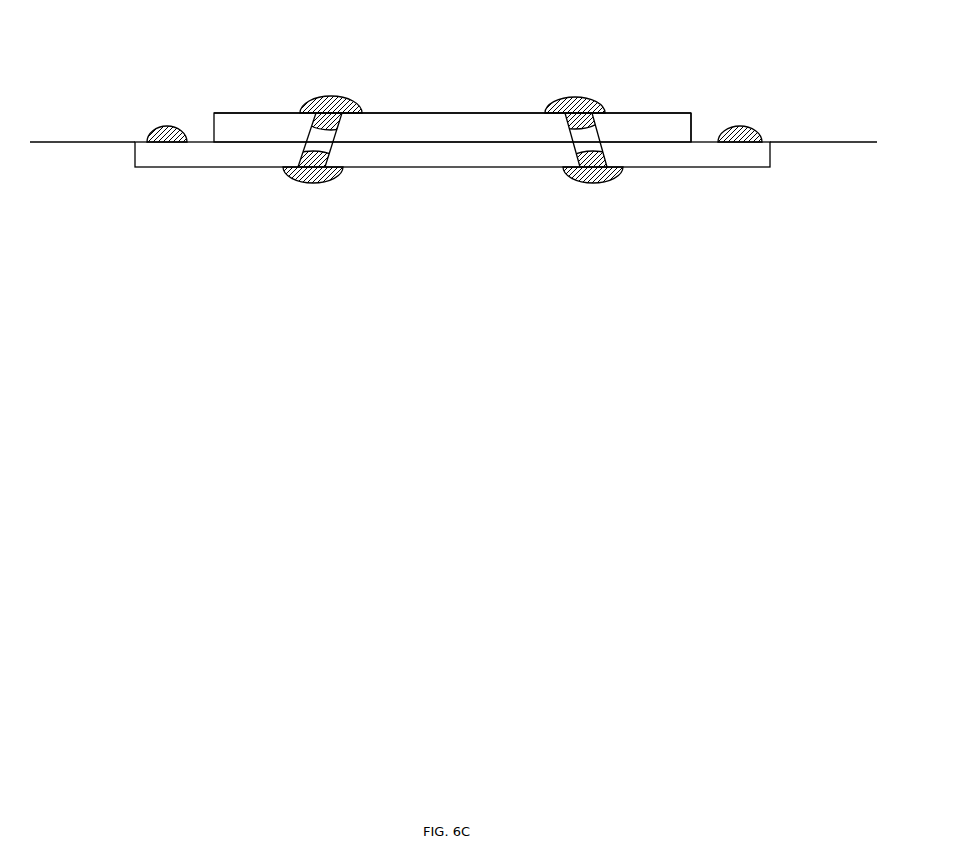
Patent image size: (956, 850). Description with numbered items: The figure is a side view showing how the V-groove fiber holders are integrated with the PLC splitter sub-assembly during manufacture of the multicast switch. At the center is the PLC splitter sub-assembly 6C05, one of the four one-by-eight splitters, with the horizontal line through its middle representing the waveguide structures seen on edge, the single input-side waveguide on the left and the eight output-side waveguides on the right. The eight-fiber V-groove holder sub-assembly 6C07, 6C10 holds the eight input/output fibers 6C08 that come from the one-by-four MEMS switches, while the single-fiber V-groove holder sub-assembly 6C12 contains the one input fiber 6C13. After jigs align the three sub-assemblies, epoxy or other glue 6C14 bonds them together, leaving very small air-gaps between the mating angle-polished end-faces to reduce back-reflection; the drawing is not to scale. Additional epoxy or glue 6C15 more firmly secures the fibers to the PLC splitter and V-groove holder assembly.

The PLC splitter sub-assembly 6C05 is at (452, 101).
The eight-fiber V-groove holder sub-assembly 6C07 is at (452, 164).
The input/output fibers 6C08 is at (823, 132).
The eight-fiber V-groove holder sub-assembly 6C10 is at (692, 116).
The single-fiber V-groove holder sub-assembly 6C12 is at (452, 116).
The input fiber 6C13 is at (82, 154).
The epoxy or glue 6C14 is at (453, 142).
The epoxy or glue 6C15 is at (453, 84).